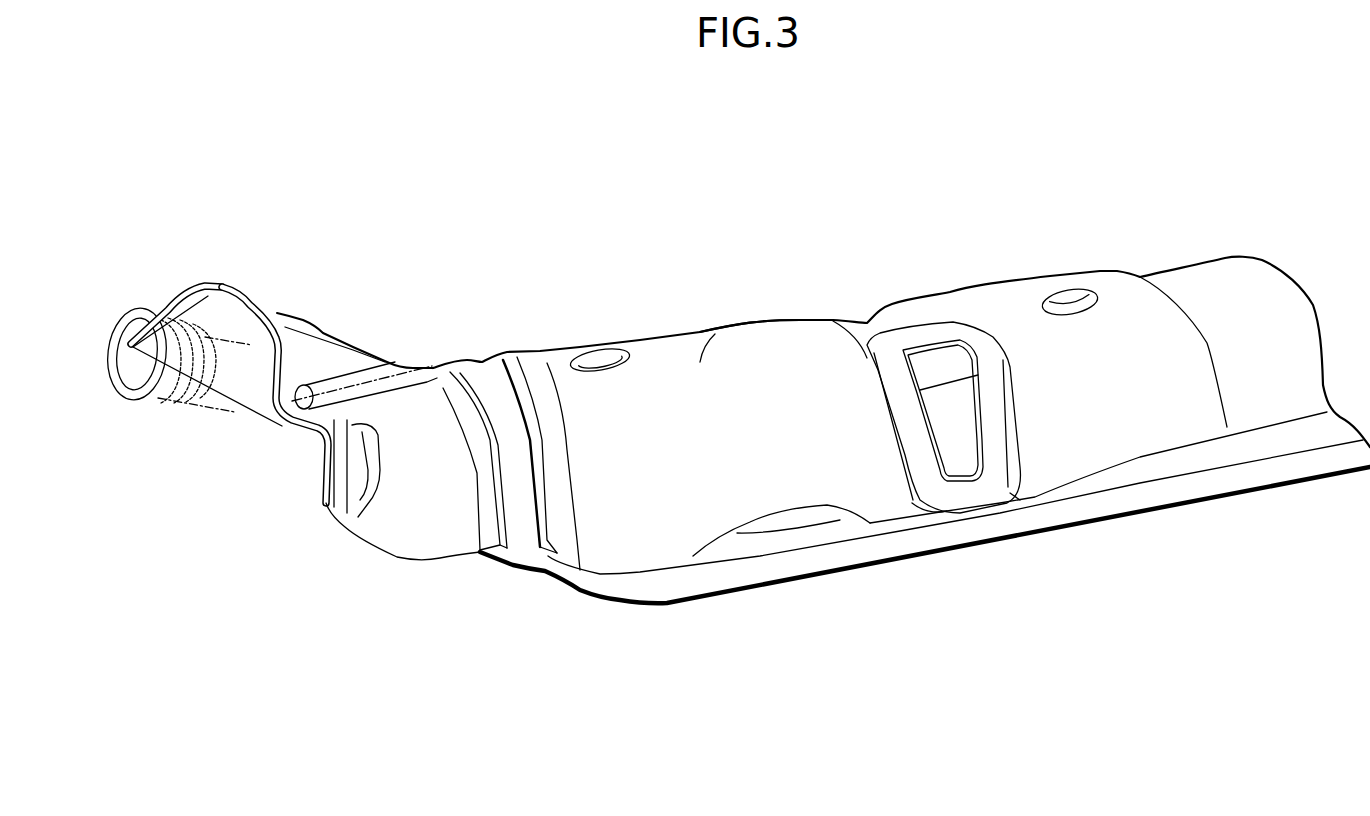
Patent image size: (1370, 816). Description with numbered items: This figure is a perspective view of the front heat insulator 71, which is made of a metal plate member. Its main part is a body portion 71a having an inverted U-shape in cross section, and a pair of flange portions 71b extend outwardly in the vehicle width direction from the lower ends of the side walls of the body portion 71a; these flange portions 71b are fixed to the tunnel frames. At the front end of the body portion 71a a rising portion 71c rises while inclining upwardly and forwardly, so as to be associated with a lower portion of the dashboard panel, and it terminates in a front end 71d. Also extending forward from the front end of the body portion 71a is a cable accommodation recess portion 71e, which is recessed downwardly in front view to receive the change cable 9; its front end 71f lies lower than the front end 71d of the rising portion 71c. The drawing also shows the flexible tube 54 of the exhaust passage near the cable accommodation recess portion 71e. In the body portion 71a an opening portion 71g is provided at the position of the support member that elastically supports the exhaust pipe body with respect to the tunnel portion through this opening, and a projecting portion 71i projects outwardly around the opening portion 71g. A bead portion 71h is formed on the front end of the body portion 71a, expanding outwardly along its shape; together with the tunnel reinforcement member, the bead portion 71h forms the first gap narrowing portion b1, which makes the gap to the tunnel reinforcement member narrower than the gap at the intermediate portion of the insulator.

The flexible tube 54 is at (132, 306).
The front heat insulator 71 is at (848, 391).
The body portion 71a is at (700, 360).
The flange portion 71b is at (770, 571).
The rising portion 71c is at (273, 310).
The front end of the rising portion 71d is at (233, 288).
The cable accommodation recess portion 71e is at (317, 382).
The front end of the cable accommodation recess portion 71f is at (274, 422).
The opening portion 71g is at (955, 483).
The bead portion 71h is at (470, 367).
The projecting portion 71i is at (978, 490).
The change cable 9 is at (370, 358).
The first gap narrowing portion b1 is at (500, 396).